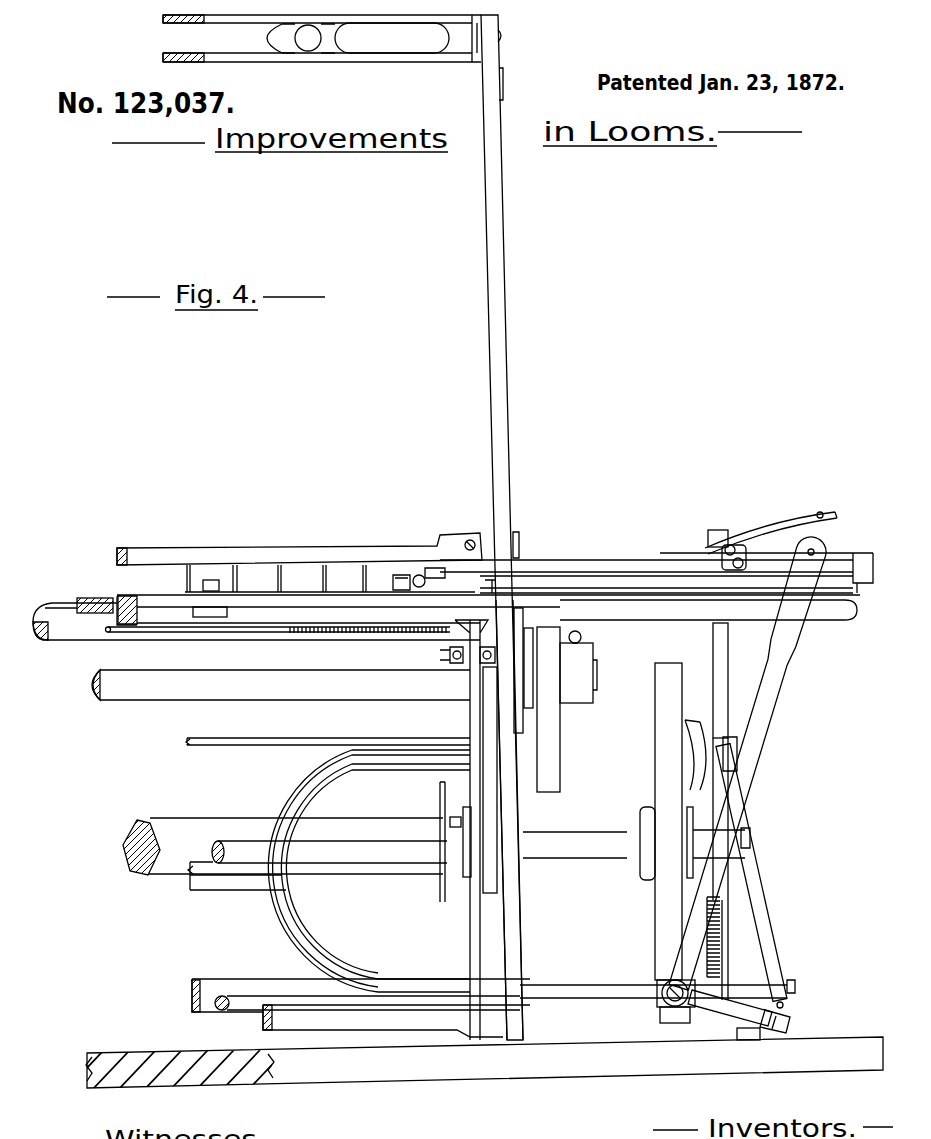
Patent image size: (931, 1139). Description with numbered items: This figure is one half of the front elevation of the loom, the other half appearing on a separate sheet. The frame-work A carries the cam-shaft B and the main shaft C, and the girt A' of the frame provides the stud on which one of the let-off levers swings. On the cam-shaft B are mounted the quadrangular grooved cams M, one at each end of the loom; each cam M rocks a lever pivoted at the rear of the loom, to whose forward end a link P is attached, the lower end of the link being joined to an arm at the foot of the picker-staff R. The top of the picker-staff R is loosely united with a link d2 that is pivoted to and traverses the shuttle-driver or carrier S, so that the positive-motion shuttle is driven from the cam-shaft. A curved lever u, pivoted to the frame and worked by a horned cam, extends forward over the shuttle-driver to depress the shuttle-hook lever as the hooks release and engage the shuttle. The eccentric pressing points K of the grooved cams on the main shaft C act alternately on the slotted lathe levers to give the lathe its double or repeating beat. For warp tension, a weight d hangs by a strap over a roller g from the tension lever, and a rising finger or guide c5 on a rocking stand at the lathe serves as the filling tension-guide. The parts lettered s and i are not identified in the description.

The quadrangular grooved cam M is at (581, 527).
The frame-work A is at (489, 820).
The girt of the frame A' is at (369, 871).
The cam-shaft B is at (481, 845).
The main shaft C is at (281, 685).
The eccentric operating or pressing point K is at (568, 670).
The picker-staff R is at (744, 771).
The link P is at (751, 876).
The shuttle-driver or carrier S is at (766, 542).
The pin s is at (519, 536).
The weight d is at (739, 1011).
The link d2 is at (747, 557).
The rising finger or guide c5 is at (211, 579).
The roller g is at (455, 816).
The slide i is at (466, 842).
The curved lever u is at (490, 780).